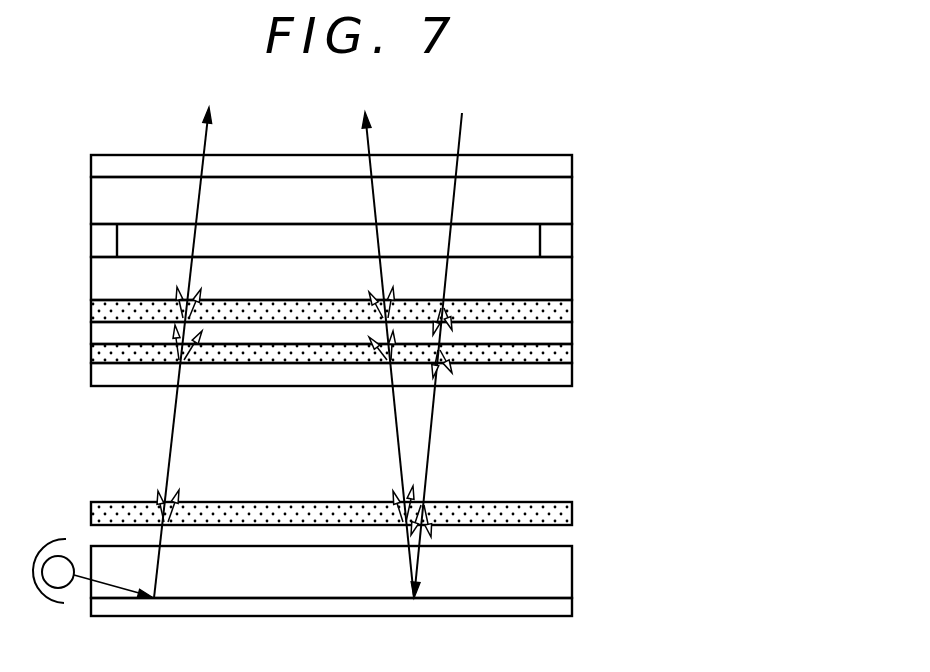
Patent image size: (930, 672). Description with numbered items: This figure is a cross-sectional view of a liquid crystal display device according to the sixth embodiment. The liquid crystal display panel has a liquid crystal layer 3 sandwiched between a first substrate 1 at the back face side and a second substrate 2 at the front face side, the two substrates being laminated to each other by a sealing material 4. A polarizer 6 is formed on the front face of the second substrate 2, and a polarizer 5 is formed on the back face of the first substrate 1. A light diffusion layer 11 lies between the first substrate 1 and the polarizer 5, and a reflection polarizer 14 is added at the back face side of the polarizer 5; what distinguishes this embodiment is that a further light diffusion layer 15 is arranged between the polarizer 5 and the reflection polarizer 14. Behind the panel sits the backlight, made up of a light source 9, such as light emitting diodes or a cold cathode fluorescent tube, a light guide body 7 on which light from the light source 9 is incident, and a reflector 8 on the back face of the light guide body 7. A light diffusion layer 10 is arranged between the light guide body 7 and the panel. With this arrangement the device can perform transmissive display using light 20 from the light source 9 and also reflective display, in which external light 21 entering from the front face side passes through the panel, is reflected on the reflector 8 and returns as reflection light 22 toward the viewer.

The first substrate 1 is at (563, 277).
The second substrate 2 is at (563, 207).
The liquid crystal layer 3 is at (523, 237).
The sealing material 4 is at (563, 242).
The polarizer 5 is at (563, 334).
The polarizer 6 is at (563, 167).
The light guide body 7 is at (563, 571).
The reflector 8 is at (563, 609).
The light source 9 is at (45, 600).
The light diffusion layer 10 is at (563, 514).
The light diffusion layer 11 is at (563, 311).
The reflection polarizer 14 is at (563, 386).
The light diffusion layer 15 is at (563, 359).
The light 20 is at (189, 338).
The external light 21 is at (441, 338).
The reflection light 22 is at (381, 338).